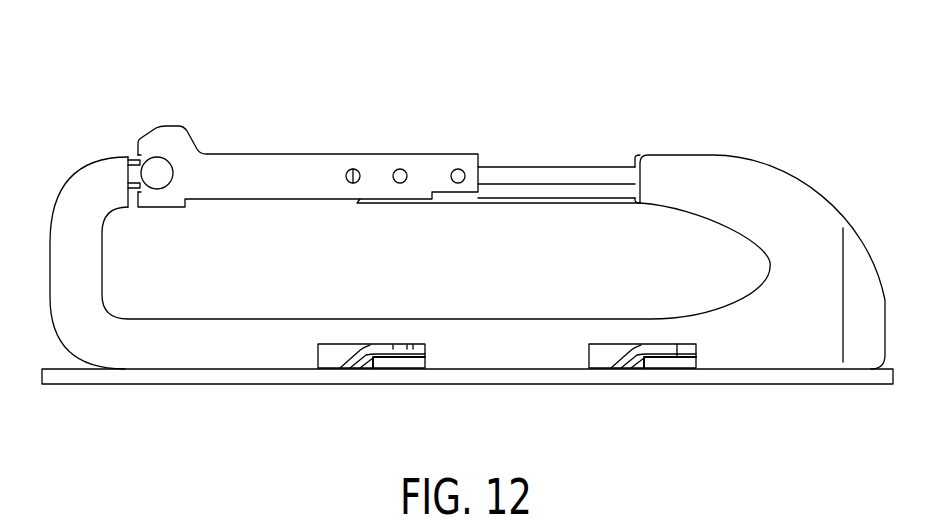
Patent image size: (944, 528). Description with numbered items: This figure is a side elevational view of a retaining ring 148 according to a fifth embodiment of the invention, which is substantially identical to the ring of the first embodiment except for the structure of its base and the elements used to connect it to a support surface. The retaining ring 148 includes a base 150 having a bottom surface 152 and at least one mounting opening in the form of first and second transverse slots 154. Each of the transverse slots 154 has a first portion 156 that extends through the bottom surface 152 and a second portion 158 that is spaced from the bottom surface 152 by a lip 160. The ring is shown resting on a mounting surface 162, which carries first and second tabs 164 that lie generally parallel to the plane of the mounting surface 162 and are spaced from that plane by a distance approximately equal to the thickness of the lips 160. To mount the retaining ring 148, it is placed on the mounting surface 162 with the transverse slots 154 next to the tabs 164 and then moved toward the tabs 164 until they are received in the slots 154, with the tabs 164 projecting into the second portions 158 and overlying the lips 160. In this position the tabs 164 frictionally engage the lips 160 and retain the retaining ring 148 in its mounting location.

The retaining ring 148 is at (753, 83).
The base 150 is at (215, 343).
The bottom surface 152 is at (247, 350).
The first and second transverse slots 154 is at (367, 367).
The first portion 156 is at (335, 352).
The second portion 158 is at (415, 348).
The lip 160 is at (400, 363).
The mounting surface 162 is at (762, 377).
The first and second tabs 164 is at (347, 372).